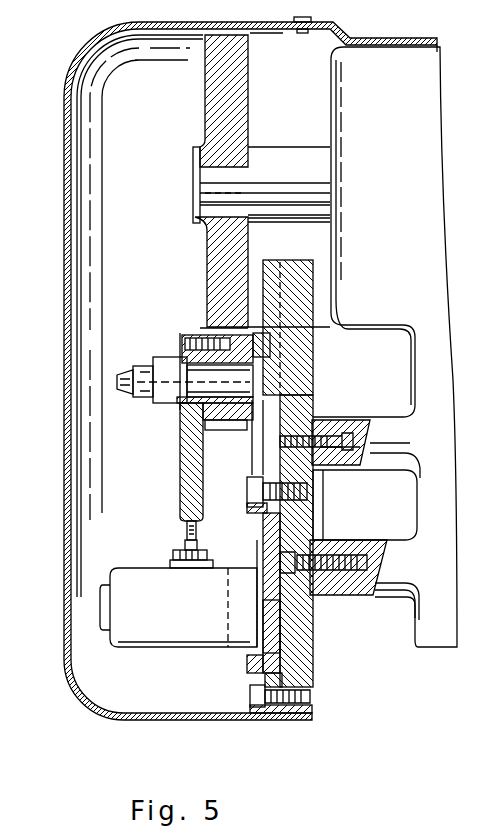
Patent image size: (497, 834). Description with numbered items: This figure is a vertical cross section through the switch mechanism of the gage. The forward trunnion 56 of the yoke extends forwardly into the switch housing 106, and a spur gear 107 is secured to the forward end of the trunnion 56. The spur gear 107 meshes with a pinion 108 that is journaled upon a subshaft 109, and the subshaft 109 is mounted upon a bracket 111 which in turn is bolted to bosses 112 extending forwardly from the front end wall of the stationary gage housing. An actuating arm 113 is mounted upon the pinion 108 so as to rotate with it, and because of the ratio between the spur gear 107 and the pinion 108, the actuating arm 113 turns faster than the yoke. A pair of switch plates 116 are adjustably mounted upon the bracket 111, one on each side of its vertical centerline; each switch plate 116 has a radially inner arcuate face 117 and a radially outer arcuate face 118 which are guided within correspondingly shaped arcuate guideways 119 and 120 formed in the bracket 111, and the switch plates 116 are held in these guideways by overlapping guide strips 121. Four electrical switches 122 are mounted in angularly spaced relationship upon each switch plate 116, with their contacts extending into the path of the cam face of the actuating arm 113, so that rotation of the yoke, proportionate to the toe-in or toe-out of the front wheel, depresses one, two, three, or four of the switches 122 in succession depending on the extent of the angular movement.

The forward trunnion 56 is at (317, 165).
The switch housing 106 is at (64, 254).
The spur gear 107 is at (242, 105).
The pinion 108 is at (220, 428).
The subshaft 109 is at (202, 370).
The bracket 111 is at (300, 313).
The bosses 112 is at (380, 432).
The actuating arm 113 is at (193, 463).
The switch plates 116 is at (273, 625).
The radially inner arcuate face 117 is at (313, 500).
The radially outer arcuate face 118 is at (287, 687).
The arcuate guideway 119 is at (265, 522).
The arcuate guideway 120 is at (270, 680).
The guide strips 121 is at (250, 508).
The electrical switches 122 is at (133, 627).